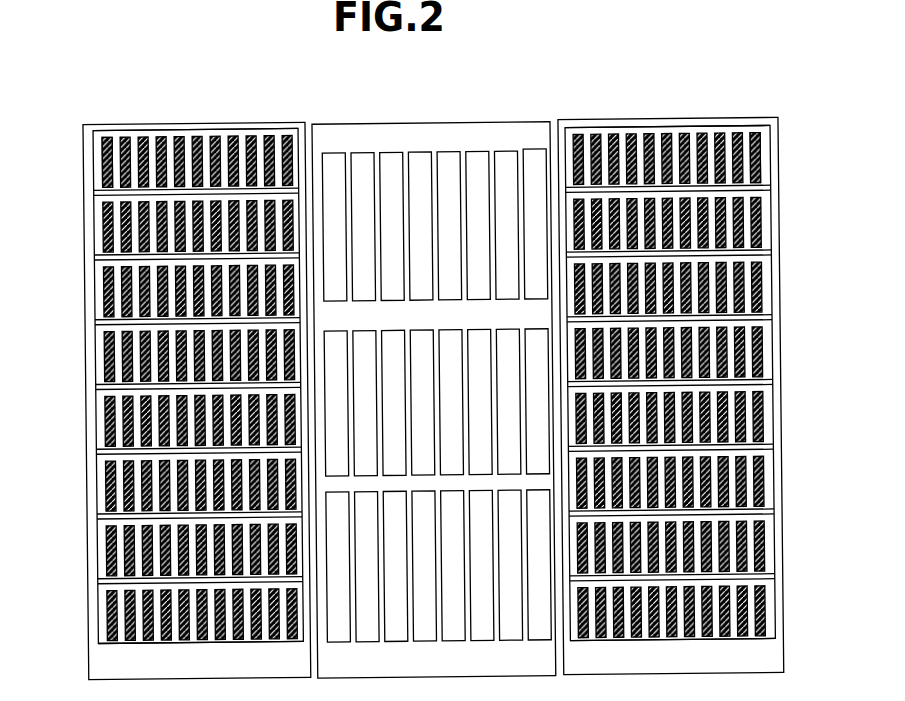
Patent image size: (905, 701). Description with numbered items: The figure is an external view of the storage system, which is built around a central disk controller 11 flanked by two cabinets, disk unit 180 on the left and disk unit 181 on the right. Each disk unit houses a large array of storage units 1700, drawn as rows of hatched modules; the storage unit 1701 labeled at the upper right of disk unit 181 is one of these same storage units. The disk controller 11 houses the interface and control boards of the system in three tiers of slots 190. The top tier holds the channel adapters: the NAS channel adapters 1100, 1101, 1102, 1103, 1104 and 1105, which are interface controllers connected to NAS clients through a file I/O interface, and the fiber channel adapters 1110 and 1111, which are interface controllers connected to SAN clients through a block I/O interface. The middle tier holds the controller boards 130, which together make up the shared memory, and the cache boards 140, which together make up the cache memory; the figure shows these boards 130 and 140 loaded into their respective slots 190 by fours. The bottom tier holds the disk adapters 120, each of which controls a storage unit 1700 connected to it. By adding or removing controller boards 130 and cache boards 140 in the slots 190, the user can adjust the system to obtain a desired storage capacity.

The disk controller 11 is at (485, 124).
The disk unit 180 is at (158, 121).
The disk unit 181 is at (657, 121).
The storage unit 1700 is at (101, 149).
The pad 1701 is at (760, 155).
The slot 190 is at (434, 198).
The NAS channel adapter 1100 is at (335, 227).
The NAS channel adapter 1101 is at (363, 227).
The fiber channel adapter 1110 is at (392, 226).
The NAS channel adapter 1102 is at (421, 226).
The NAS channel adapter 1103 is at (450, 226).
The NAS channel adapter 1104 is at (478, 225).
The NAS channel adapter 1105 is at (507, 225).
The fiber channel adapter 1111 is at (536, 224).
The controller board 130 is at (380, 403).
The cache board 140 is at (494, 402).
The disk adapter 120 is at (438, 566).